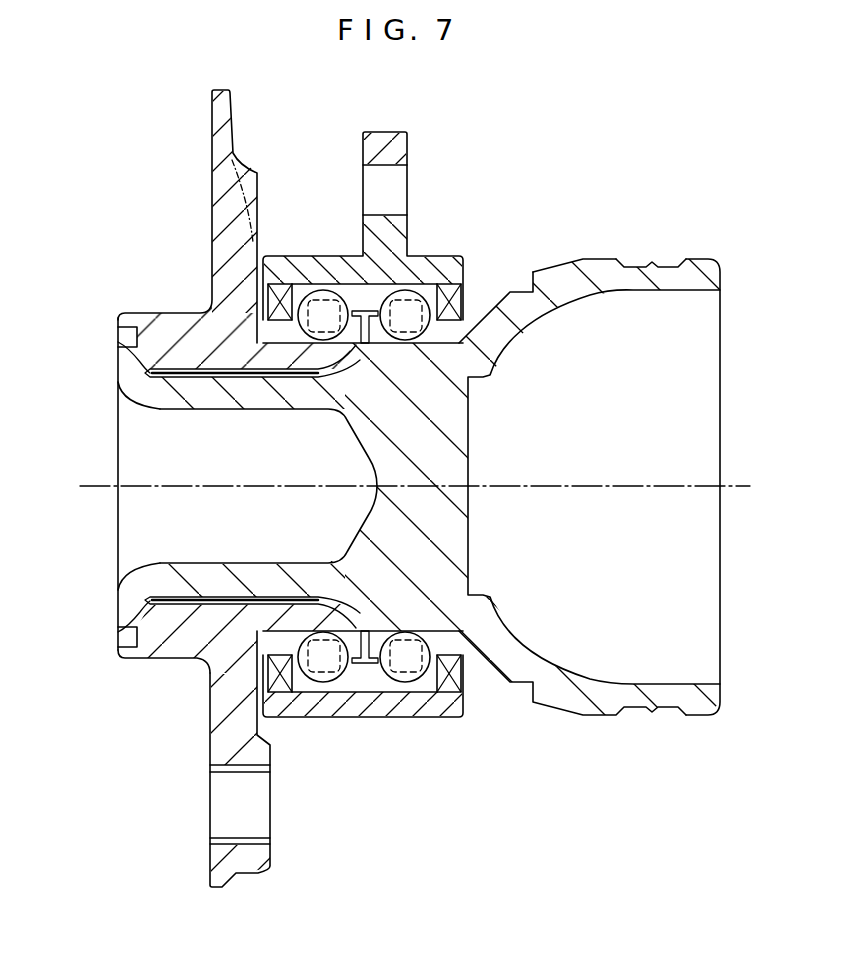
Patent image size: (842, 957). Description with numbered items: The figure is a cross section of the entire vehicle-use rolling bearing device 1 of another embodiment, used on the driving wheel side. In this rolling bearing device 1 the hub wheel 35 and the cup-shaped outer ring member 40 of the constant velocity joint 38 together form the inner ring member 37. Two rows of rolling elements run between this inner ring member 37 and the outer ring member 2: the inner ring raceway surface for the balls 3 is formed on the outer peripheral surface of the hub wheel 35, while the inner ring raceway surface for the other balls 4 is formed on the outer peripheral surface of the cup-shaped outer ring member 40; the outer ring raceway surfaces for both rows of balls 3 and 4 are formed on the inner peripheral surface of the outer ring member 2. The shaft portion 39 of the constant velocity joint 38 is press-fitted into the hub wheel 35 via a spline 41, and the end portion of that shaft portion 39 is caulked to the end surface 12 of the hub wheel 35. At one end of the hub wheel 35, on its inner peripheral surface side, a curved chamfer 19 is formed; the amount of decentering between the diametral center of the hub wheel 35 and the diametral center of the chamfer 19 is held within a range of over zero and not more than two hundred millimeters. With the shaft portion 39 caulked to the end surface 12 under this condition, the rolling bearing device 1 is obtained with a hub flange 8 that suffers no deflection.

The rolling bearing device 1 is at (431, 152).
The outer ring member 2 is at (335, 708).
The balls 3 is at (332, 290).
The balls 4 is at (400, 287).
The hub flange 8 is at (216, 112).
The end surface 12 is at (127, 342).
The curved chamfer 19 is at (143, 373).
The hub wheel 35 is at (187, 308).
The inner ring member 37 is at (436, 451).
The constant velocity joint 38 is at (597, 256).
The shaft portion 39 is at (207, 585).
The cup-shaped outer ring member 40 is at (640, 272).
The spline 41 is at (167, 606).